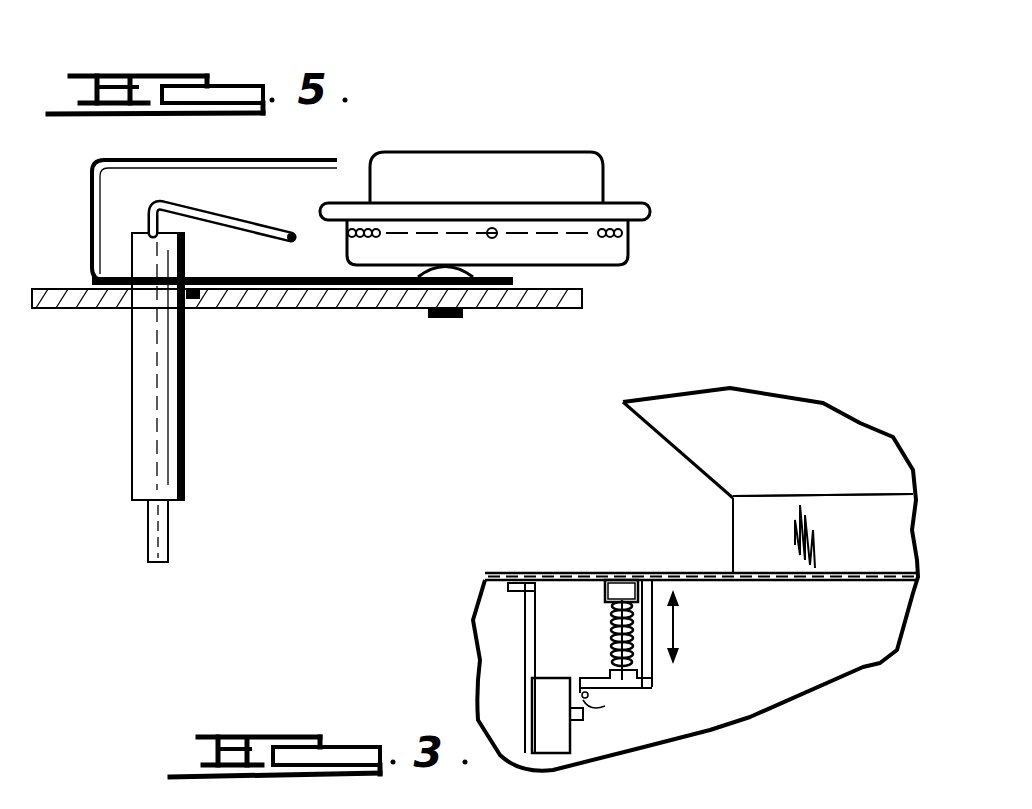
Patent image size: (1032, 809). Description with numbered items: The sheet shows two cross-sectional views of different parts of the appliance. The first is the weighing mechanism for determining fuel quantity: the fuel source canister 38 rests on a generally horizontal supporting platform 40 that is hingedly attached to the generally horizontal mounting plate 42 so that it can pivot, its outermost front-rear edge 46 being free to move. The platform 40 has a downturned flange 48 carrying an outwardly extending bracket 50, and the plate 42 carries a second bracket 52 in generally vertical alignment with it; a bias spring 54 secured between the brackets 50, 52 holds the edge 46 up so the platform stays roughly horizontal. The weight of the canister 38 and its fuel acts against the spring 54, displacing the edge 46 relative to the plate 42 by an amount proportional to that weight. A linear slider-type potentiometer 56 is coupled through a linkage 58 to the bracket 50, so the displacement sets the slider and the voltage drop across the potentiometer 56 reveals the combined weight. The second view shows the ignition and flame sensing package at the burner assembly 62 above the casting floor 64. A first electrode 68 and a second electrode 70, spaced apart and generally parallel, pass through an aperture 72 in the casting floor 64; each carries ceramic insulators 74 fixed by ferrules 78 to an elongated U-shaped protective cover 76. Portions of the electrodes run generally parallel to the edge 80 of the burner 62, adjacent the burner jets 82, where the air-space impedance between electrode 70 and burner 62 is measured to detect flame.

In FIG. 3, the fuel source canister 38 is at (672, 433).
In FIG. 3, the supporting platform 40 is at (795, 580).
In FIG. 3, the mounting plate 42 is at (578, 573).
In FIG. 3, the outermost front-rear edge 46 is at (642, 572).
In FIG. 3, the downturned flange 48 is at (652, 665).
In FIG. 3, the bracket 50 is at (630, 689).
In FIG. 3, the bracket 52 is at (610, 591).
In FIG. 3, the bias spring 54 is at (611, 638).
In FIG. 3, the linear slider-type potentiometer 56 is at (548, 695).
In FIG. 3, the linkage 58 is at (588, 702).
In FIG. 5, the burner assembly 62 is at (547, 166).
In FIG. 5, the casting floor 64 is at (347, 302).
In FIG. 5, the first electrode 68 is at (263, 239).
In FIG. 5, the second electrode 70 is at (294, 230).
In FIG. 5, the aperture 72 is at (205, 304).
In FIG. 5, the ceramic insulators 74 is at (143, 434).
In FIG. 5, the U-shaped protective cover 76 is at (92, 221).
In FIG. 5, the ferrules 78 is at (147, 304).
In FIG. 5, the edge of burner 80 is at (328, 200).
In FIG. 5, the burner jets 82 is at (392, 237).